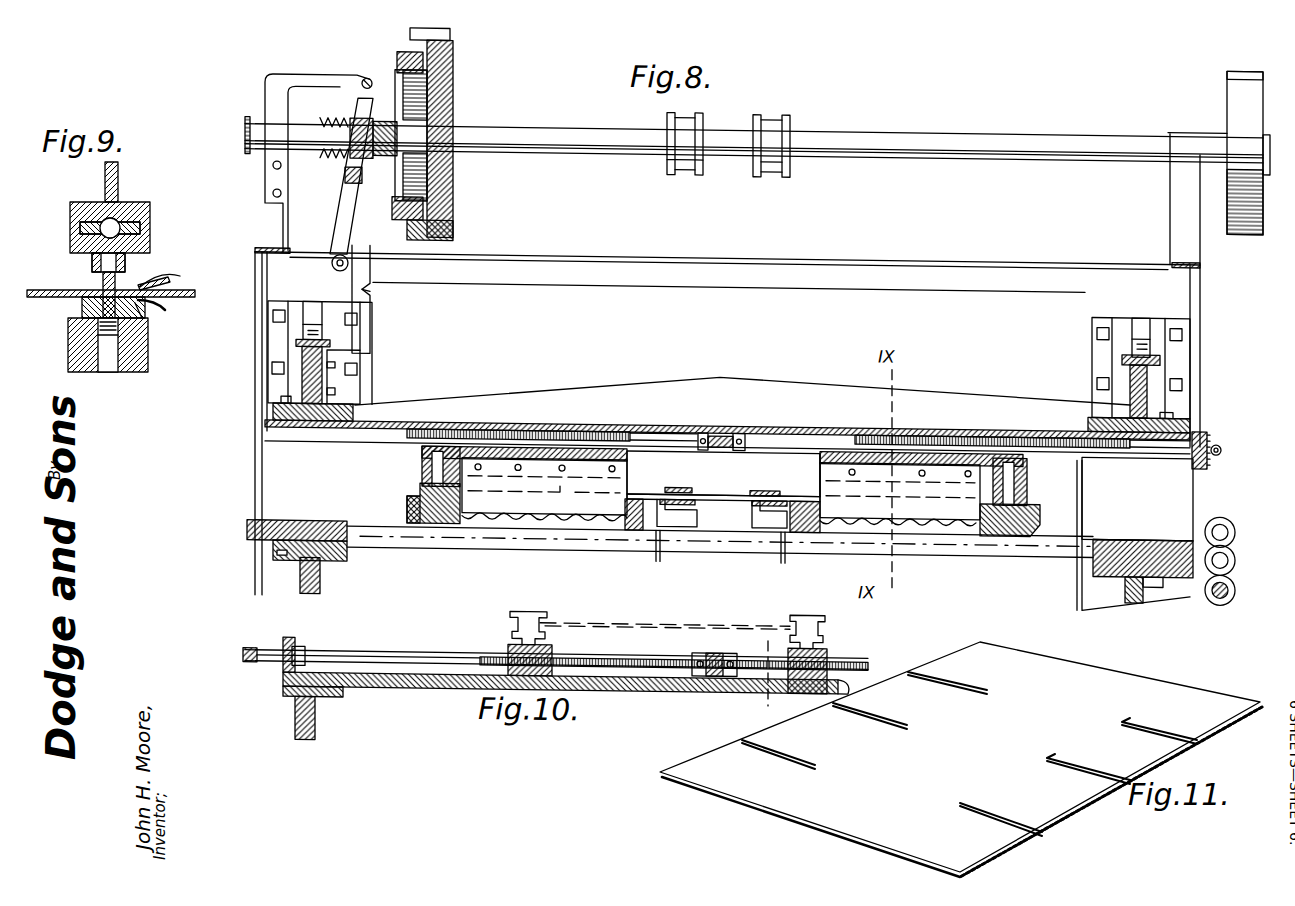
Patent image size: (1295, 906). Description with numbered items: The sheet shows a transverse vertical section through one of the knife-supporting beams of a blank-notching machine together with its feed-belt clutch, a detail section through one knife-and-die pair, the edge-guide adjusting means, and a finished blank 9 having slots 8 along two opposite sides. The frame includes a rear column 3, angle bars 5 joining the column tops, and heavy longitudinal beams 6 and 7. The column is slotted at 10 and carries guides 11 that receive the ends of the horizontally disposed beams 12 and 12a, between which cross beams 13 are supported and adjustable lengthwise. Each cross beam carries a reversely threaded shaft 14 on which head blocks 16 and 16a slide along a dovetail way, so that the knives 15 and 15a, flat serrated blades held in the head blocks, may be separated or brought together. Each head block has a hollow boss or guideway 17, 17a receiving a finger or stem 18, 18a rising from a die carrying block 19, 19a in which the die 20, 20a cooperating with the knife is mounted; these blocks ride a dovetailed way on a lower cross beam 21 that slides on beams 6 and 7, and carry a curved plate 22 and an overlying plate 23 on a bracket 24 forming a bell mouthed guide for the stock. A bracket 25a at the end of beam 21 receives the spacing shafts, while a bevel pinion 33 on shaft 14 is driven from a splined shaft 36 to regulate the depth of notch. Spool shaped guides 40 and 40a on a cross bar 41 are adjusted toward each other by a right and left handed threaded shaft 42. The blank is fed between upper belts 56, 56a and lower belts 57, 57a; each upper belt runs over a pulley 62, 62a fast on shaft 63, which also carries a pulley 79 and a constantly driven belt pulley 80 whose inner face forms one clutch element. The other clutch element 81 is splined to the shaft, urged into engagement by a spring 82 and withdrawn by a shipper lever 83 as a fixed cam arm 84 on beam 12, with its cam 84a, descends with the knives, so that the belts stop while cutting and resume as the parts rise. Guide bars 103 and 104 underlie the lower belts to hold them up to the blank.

In FIG. 8, the rear column 3 is at (268, 484).
In FIG. 8, the angle bar 5 is at (255, 278).
In FIG. 8, the longitudinal beam 6 is at (320, 590).
In FIG. 10, the longitudinal beam 6 is at (315, 730).
In FIG. 8, the longitudinal beam 7 is at (1140, 594).
In FIG. 11, the slot 8 is at (965, 688).
In FIG. 8, the blank 9 is at (723, 506).
In FIG. 9, the blank 9 is at (52, 297).
In FIG. 11, the blank 9 is at (740, 788).
In FIG. 8, the slot 10 is at (313, 306).
In FIG. 8, the guide 11 is at (345, 341).
In FIG. 8, the beam 12 is at (300, 390).
In FIG. 8, the beam 12a is at (1150, 392).
In FIG. 8, the cross beam 13 is at (557, 395).
In FIG. 9, the cross beam 13 is at (150, 212).
In FIG. 8, the threaded shaft 14 is at (380, 441).
In FIG. 9, the threaded shaft 14 is at (73, 231).
In FIG. 8, the knife 15 is at (510, 505).
In FIG. 9, the knife 15 is at (103, 281).
In FIG. 8, the knife 15a is at (937, 505).
In FIG. 8, the head block 16 is at (628, 457).
In FIG. 9, the head block 16 is at (150, 252).
In FIG. 8, the head block 16a is at (820, 460).
In FIG. 8, the hollow boss 17 is at (422, 474).
In FIG. 8, the hollow boss 17a is at (1020, 497).
In FIG. 8, the finger 18 is at (437, 474).
In FIG. 8, the finger 18a is at (1027, 470).
In FIG. 8, the die carrying block 19 is at (432, 531).
In FIG. 9, the die carrying block 19 is at (68, 342).
In FIG. 8, the die carrying block 19a is at (806, 537).
In FIG. 8, the die 20 is at (463, 500).
In FIG. 9, the die 20 is at (133, 290).
In FIG. 8, the die 20a is at (998, 534).
In FIG. 8, the cross beam 21 is at (593, 545).
In FIG. 9, the cross beam 21 is at (130, 372).
In FIG. 9, the curved plate 22 is at (165, 310).
In FIG. 9, the plate 23 is at (170, 281).
In FIG. 9, the bracket 24 is at (148, 318).
In FIG. 8, the bracket 25a is at (1212, 597).
In FIG. 8, the bevel pinion 33 is at (1200, 463).
In FIG. 8, the splined shaft 36 is at (1221, 441).
In FIG. 10, the spool shaped guide 40 is at (510, 626).
In FIG. 10, the spool shaped guide 40a is at (825, 622).
In FIG. 8, the cross bar 41 is at (1137, 499).
In FIG. 10, the cross bar 41 is at (418, 692).
In FIG. 10, the threaded shaft 42 is at (432, 650).
In FIG. 8, the endless belt 56 is at (690, 488).
In FIG. 8, the endless belt 56a is at (765, 490).
In FIG. 8, the endless belt 57 is at (697, 506).
In FIG. 8, the endless belt 57a is at (785, 505).
In FIG. 8, the pulley 62 is at (668, 176).
In FIG. 8, the pulley 62a is at (772, 178).
In FIG. 8, the shaft 63 is at (542, 152).
In FIG. 8, the pulley 79 is at (1227, 103).
In FIG. 8, the belt pulley 80 is at (453, 217).
In FIG. 8, the clutch element 81 is at (397, 62).
In FIG. 8, the spring 82 is at (340, 153).
In FIG. 8, the shipper lever 83 is at (345, 215).
In FIG. 8, the cam arm 84 is at (372, 290).
In FIG. 8, the cam 84a is at (367, 292).
In FIG. 8, the guide bar 103 is at (662, 541).
In FIG. 8, the guide bar 104 is at (742, 531).